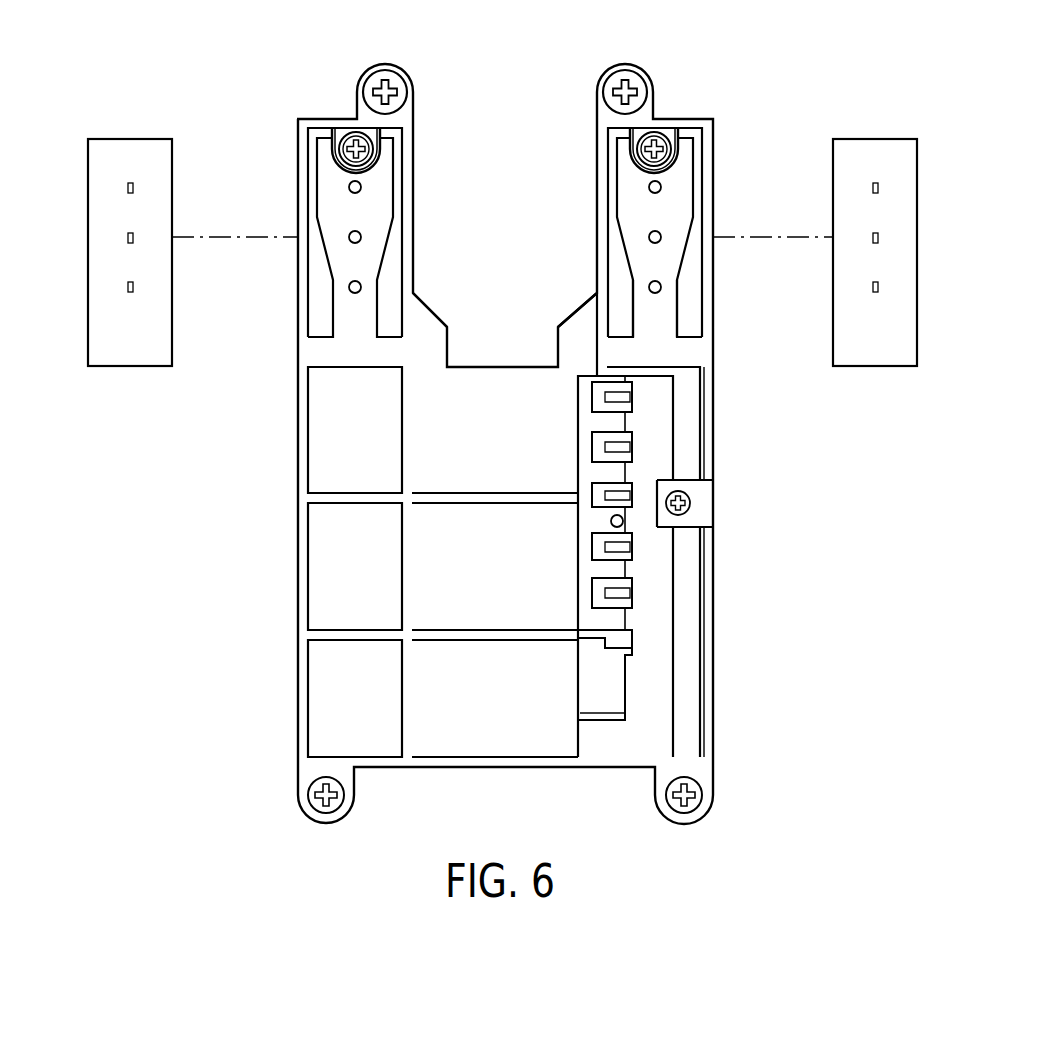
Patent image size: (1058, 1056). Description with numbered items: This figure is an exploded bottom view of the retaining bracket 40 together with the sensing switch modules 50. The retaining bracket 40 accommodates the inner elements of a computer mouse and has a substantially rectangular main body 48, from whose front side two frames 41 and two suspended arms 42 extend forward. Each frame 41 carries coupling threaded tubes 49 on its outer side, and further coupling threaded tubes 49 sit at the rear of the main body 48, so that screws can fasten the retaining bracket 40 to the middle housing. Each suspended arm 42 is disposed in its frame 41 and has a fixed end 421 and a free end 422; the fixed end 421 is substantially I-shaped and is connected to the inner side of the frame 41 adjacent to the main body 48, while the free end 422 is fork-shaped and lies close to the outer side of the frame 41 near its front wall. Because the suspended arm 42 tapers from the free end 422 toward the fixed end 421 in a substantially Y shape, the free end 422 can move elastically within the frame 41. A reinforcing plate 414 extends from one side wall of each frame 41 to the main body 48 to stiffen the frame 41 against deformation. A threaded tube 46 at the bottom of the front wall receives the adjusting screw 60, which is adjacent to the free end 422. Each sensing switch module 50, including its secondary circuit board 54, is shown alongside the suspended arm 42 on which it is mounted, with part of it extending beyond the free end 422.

The retaining bracket 40 is at (713, 658).
The frame 41 is at (297, 353).
The suspended arm 42 is at (333, 256).
The fixed end 421 is at (655, 315).
The free end 422 is at (322, 148).
The reinforcing plate 414 is at (428, 312).
The threaded tube 46 is at (637, 148).
The main body 48 is at (713, 611).
The coupling threaded tube 49 is at (388, 64).
The sensing switch module 50 is at (130, 139).
The secondary circuit board 54 is at (88, 213).
The adjusting screw 60 is at (660, 130).